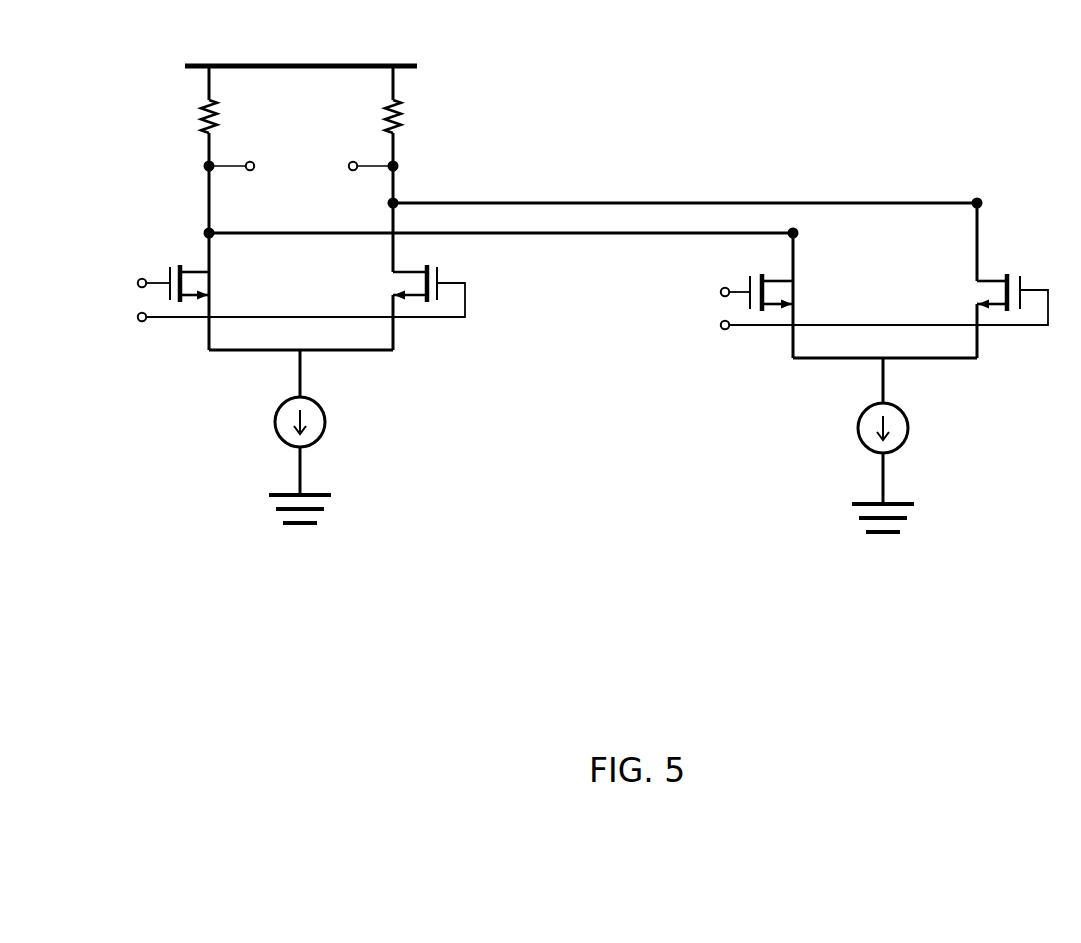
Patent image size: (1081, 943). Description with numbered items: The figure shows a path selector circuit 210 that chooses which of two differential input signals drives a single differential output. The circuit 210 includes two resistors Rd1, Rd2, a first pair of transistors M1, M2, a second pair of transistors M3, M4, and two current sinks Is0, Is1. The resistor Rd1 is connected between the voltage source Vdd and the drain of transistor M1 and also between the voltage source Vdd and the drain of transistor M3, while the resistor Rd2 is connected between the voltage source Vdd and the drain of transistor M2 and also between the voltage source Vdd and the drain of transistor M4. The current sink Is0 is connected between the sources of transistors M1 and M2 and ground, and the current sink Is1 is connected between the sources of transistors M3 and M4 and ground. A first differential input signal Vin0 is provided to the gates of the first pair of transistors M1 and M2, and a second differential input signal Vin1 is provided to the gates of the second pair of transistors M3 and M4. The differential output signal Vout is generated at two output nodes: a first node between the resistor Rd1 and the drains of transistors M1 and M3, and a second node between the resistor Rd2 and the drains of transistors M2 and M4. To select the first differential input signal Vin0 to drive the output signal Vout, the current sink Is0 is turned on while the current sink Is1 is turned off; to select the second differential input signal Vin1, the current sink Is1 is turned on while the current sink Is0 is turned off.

The path selector circuit 210 is at (559, 422).
The voltage source Vdd is at (331, 66).
The resistor Rd1 is at (174, 116).
The resistor Rd2 is at (426, 116).
The differential output signal Vout is at (301, 173).
The transistor M1 is at (218, 286).
The transistor M2 is at (385, 283).
The transistor M3 is at (799, 292).
The transistor M4 is at (969, 292).
The first differential input signal Vin0 is at (268, 298).
The second differential input signal Vin1 is at (851, 307).
The current sink Is0 is at (322, 436).
The current sink Is1 is at (905, 445).